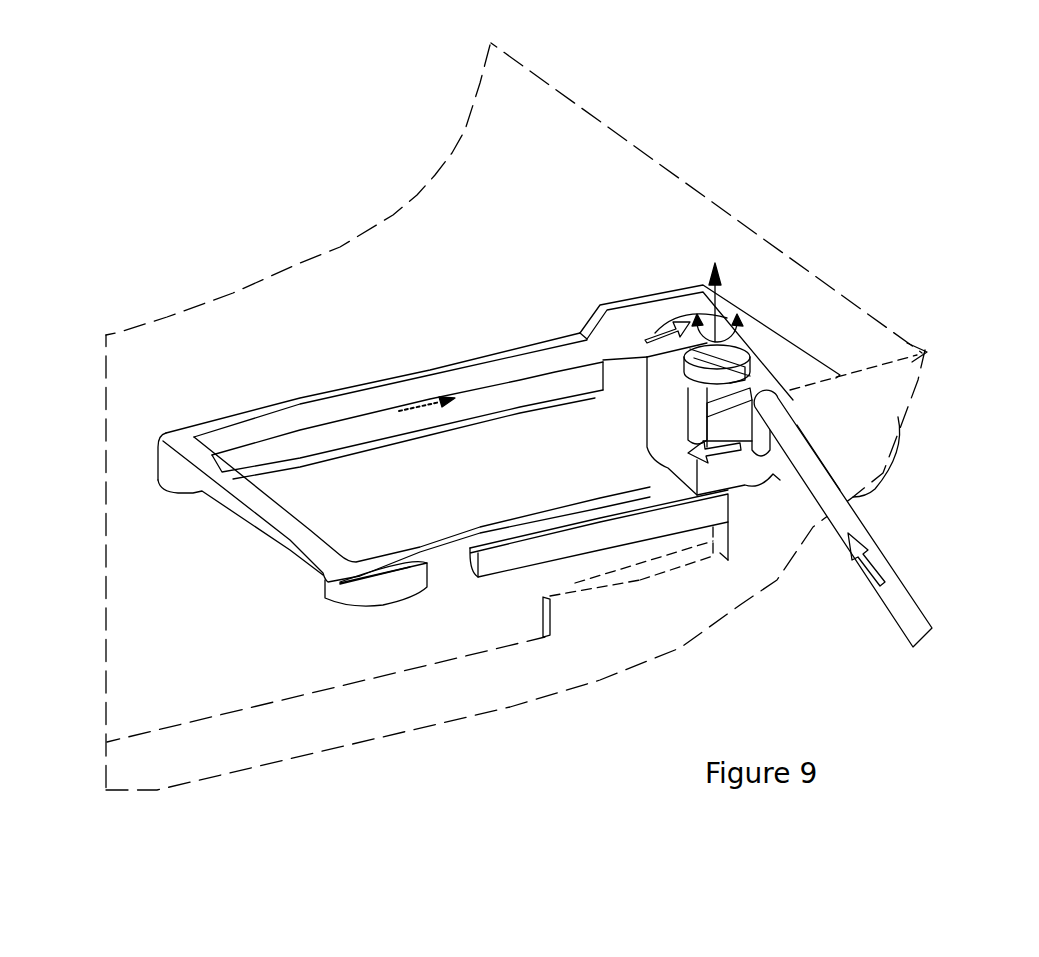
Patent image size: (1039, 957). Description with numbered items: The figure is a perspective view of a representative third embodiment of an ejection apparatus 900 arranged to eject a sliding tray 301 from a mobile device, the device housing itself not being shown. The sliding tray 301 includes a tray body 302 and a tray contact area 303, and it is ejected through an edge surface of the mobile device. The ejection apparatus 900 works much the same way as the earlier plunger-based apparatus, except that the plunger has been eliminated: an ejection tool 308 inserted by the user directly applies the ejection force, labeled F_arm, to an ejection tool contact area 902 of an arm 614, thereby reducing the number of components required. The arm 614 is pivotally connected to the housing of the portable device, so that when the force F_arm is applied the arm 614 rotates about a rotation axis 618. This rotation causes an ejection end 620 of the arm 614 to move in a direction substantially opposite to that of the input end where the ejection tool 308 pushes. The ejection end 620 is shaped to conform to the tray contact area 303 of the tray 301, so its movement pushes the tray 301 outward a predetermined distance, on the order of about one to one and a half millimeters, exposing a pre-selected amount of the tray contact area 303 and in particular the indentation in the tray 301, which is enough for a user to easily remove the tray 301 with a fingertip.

The ejection apparatus 900 is at (842, 135).
The sliding tray 301 is at (409, 370).
The tray body 302 is at (467, 380).
The tray contact area 303 is at (695, 297).
The ejection tool 308 is at (838, 518).
The arm 614 is at (662, 397).
The rotation axis 618 is at (723, 270).
The ejection end 620 is at (706, 312).
The ejection tool contact area 902 is at (750, 419).